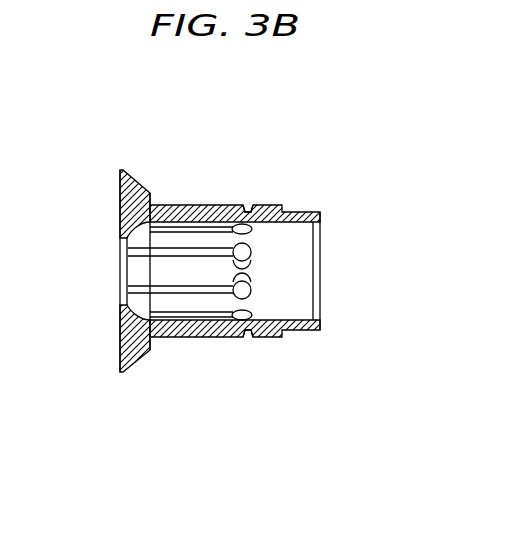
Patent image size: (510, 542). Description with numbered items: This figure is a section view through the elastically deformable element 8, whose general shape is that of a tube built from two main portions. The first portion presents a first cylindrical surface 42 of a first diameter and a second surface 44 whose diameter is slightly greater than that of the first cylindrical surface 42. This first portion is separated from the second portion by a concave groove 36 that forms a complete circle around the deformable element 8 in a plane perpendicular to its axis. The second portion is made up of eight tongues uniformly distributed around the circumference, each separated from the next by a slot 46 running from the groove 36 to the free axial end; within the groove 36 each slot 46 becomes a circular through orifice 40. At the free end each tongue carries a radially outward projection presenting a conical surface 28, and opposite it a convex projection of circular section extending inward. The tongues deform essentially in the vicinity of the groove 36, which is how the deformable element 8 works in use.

The elastically deformable element 8 is at (228, 121).
The conical surface 28 is at (146, 192).
The concave groove 36 is at (242, 207).
The circular through orifice 40 is at (253, 290).
The first cylindrical surface 42 is at (303, 210).
The second surface 44 is at (270, 340).
The slot 46 is at (187, 253).